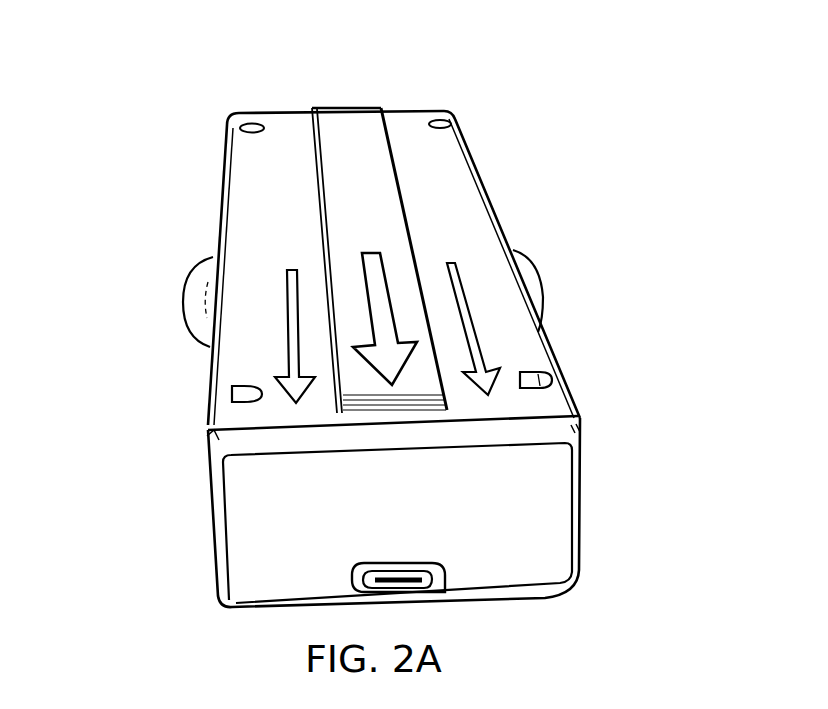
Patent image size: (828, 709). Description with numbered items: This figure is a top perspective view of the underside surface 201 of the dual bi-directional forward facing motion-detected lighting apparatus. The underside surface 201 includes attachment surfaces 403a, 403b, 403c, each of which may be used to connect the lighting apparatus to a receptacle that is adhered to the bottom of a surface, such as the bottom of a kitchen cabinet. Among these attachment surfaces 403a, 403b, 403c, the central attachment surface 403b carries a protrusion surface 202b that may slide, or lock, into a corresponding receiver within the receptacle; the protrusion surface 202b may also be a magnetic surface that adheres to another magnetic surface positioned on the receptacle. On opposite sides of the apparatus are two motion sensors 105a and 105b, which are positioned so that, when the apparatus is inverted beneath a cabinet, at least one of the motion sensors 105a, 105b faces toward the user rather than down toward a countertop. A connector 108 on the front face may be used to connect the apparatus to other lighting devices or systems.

The underside surface 201 is at (246, 100).
The protrusion surface 202b is at (354, 128).
The attachment surface 403a is at (250, 238).
The attachment surface 403b is at (365, 185).
The attachment surface 403c is at (475, 235).
The motion sensor 105a is at (550, 282).
The motion sensor 105b is at (196, 298).
The connector 108 is at (412, 565).